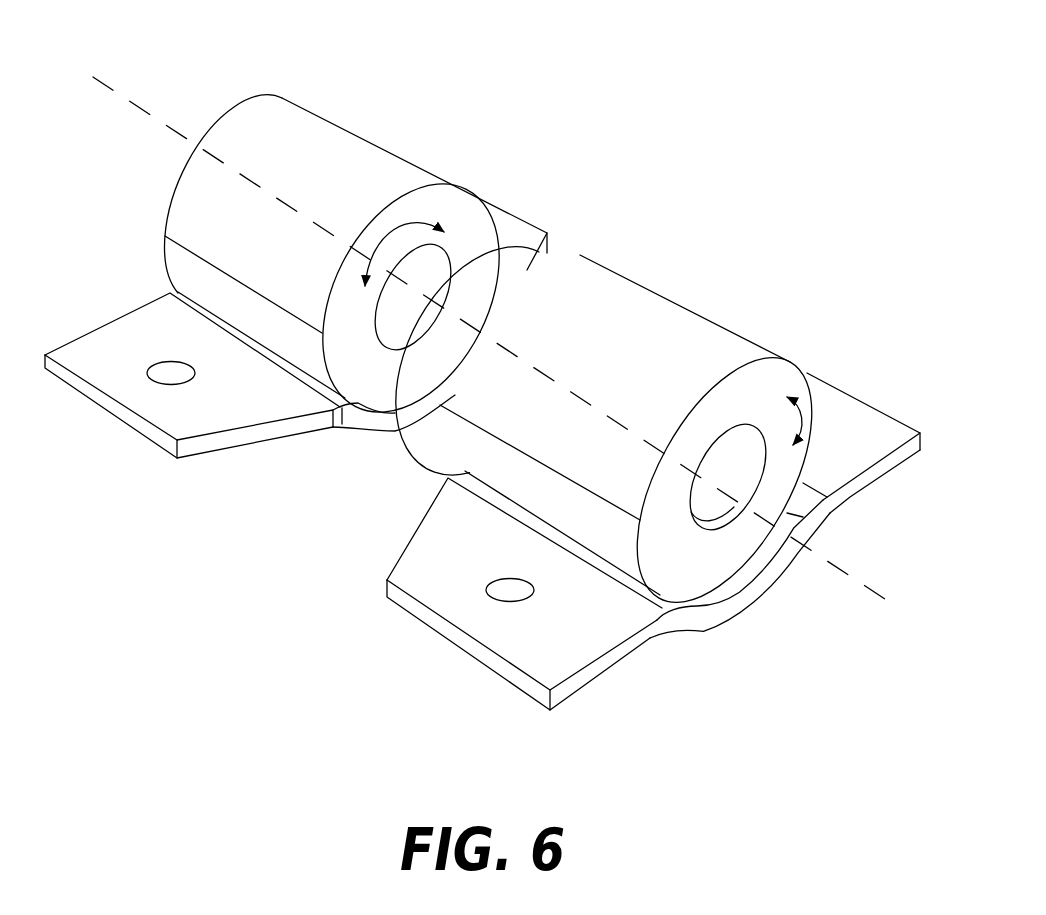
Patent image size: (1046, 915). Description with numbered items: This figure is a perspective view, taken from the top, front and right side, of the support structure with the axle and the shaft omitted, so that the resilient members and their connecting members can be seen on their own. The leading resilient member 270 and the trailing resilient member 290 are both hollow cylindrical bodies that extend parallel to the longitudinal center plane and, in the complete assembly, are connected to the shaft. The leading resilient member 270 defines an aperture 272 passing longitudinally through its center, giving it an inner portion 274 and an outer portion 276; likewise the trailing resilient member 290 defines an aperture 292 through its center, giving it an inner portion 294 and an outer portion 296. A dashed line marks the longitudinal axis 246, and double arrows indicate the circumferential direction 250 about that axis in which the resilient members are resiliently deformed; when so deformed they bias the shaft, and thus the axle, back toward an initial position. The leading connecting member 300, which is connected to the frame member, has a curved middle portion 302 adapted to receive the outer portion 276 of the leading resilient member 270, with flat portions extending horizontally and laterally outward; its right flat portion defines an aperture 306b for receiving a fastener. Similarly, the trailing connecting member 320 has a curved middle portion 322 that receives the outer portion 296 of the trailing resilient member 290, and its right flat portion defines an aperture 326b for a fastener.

The longitudinal axis 246 is at (860, 578).
The circumferential direction 250 is at (400, 220).
The leading resilient member 270 is at (747, 390).
The aperture 272 is at (728, 533).
The inner portion 274 is at (753, 465).
The outer portion 276 is at (679, 451).
The trailing resilient member 290 is at (312, 264).
The aperture 292 is at (455, 256).
The inner portion 294 is at (408, 322).
The outer portion 296 is at (187, 177).
The leading connecting member 300 is at (653, 569).
The curved middle portion 302 is at (717, 598).
The aperture 306b is at (503, 607).
The trailing connecting member 320 is at (250, 392).
The curved middle portion 322 is at (366, 428).
The aperture 326b is at (158, 360).